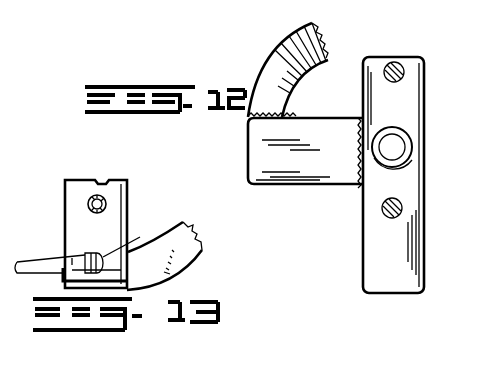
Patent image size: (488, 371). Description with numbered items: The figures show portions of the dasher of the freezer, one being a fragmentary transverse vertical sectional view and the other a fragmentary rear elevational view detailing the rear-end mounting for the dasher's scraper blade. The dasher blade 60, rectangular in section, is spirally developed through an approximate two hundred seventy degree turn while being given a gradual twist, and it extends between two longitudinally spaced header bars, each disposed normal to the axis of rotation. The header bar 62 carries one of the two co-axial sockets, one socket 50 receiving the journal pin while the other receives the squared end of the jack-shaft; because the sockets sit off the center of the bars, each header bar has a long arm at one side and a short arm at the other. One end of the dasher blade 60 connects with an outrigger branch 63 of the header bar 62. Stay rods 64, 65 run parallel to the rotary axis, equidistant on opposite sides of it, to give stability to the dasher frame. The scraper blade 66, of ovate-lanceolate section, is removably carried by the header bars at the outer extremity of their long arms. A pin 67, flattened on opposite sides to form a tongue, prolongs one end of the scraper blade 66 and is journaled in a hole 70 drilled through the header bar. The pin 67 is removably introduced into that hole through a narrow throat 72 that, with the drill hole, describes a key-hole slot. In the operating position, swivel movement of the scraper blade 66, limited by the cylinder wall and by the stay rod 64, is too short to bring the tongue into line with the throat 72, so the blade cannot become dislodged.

In FIG. 12, the socket 50 is at (405, 150).
In FIG. 12, the dasher blade 60 is at (300, 40).
In FIG. 13, the dasher blade 60 is at (195, 238).
In FIG. 12, the header bar 62 is at (413, 101).
In FIG. 12, the outrigger branch 63 is at (313, 182).
In FIG. 12, the stay rod 64 is at (403, 208).
In FIG. 12, the stay rod 65 is at (394, 62).
In FIG. 13, the scraper blade 66 is at (38, 262).
In FIG. 13, the pin 67 is at (88, 253).
In FIG. 13, the hole 70 is at (129, 240).
In FIG. 13, the throat 72 is at (62, 271).